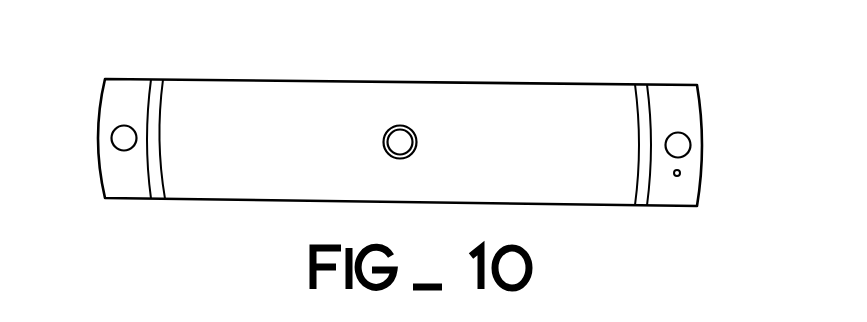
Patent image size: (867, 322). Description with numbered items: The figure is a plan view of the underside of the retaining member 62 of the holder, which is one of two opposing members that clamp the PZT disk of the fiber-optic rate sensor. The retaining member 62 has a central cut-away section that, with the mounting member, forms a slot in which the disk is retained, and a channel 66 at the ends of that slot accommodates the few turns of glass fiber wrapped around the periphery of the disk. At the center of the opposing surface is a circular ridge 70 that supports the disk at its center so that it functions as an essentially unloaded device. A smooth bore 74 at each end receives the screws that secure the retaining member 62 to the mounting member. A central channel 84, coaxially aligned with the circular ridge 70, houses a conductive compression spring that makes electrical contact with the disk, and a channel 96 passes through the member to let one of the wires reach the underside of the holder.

The retaining member 62 is at (230, 201).
The channel 66 is at (160, 88).
The circular ridge 70 is at (390, 130).
The smooth bore 74 is at (118, 137).
The central channel 84 is at (403, 137).
The channel 96 is at (681, 172).